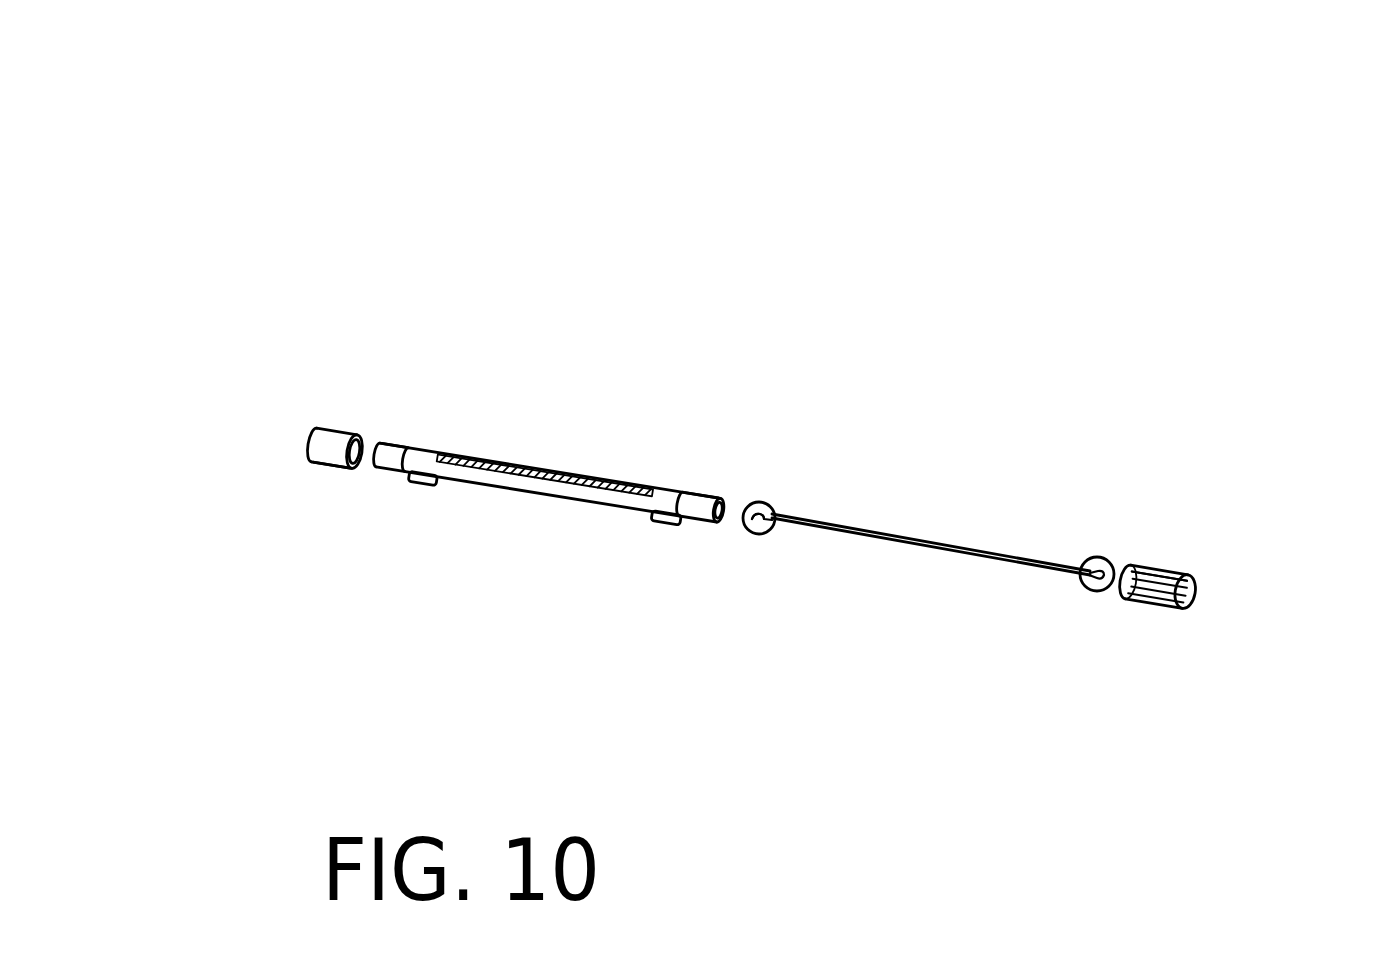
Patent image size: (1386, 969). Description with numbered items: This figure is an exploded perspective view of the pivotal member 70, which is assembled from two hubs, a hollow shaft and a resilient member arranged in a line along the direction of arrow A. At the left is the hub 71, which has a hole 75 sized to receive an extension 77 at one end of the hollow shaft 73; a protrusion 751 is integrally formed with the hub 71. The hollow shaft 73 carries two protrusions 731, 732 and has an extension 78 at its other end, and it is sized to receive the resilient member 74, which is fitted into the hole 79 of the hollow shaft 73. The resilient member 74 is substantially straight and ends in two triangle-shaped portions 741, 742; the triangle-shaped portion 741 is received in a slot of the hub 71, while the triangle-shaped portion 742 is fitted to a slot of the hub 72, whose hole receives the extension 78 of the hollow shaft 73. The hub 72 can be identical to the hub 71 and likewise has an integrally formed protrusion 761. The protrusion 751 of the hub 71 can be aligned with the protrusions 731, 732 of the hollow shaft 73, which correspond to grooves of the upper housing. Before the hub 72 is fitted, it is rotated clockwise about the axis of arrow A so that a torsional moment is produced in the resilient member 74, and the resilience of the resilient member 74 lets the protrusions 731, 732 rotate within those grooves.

The pivotal member 70 is at (835, 99).
The hub 71 is at (328, 425).
The hub 72 is at (1135, 607).
The hollow shaft 73 is at (548, 455).
The resilient member 74 is at (940, 538).
The hole 75 is at (365, 447).
The extension 77 is at (385, 485).
The extension 78 is at (713, 492).
The hole 79 is at (821, 359).
The protrusion 731 is at (425, 505).
The protrusion 732 is at (672, 540).
The triangle-shaped portion 741 is at (758, 545).
The triangle-shaped portion 742 is at (1100, 548).
The protrusion 751 is at (327, 463).
The protrusion 761 is at (1168, 577).